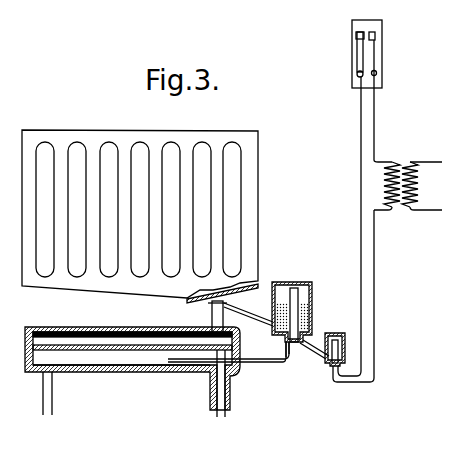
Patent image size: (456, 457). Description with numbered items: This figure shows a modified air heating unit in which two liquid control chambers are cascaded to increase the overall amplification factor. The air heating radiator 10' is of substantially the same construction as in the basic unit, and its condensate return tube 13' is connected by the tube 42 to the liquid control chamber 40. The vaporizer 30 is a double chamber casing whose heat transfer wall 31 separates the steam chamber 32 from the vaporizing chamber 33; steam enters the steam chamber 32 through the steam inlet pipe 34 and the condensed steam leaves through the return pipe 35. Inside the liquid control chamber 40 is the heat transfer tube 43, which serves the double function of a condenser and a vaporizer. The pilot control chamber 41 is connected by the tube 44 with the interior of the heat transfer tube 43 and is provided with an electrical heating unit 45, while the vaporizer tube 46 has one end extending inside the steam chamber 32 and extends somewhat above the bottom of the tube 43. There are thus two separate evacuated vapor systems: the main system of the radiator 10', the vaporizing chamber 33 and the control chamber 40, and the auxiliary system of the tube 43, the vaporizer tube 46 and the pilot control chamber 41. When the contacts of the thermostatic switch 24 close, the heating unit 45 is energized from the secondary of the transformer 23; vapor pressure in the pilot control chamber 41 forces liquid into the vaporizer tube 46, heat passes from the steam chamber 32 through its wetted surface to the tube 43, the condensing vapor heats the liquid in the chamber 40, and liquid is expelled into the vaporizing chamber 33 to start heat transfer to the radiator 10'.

The air heating radiator 10' is at (160, 214).
The condensate return tube 13' is at (214, 308).
The transformer 23 is at (400, 163).
The thermostatic switch 24 is at (377, 73).
The vaporizer 30 is at (85, 327).
The heat transfer wall 31 is at (116, 350).
The steam chamber 32 is at (150, 366).
The vaporizing chamber 33 is at (151, 340).
The steam inlet pipe 34 is at (233, 407).
The return pipe 35 is at (45, 403).
The liquid control chamber 40 is at (290, 282).
The pilot control chamber 41 is at (337, 332).
The tube 42 is at (263, 318).
The heat transfer tube 43 is at (299, 292).
The tube 44 is at (292, 352).
The electrical heating unit 45 is at (328, 358).
The vaporizer tube 46 is at (190, 365).